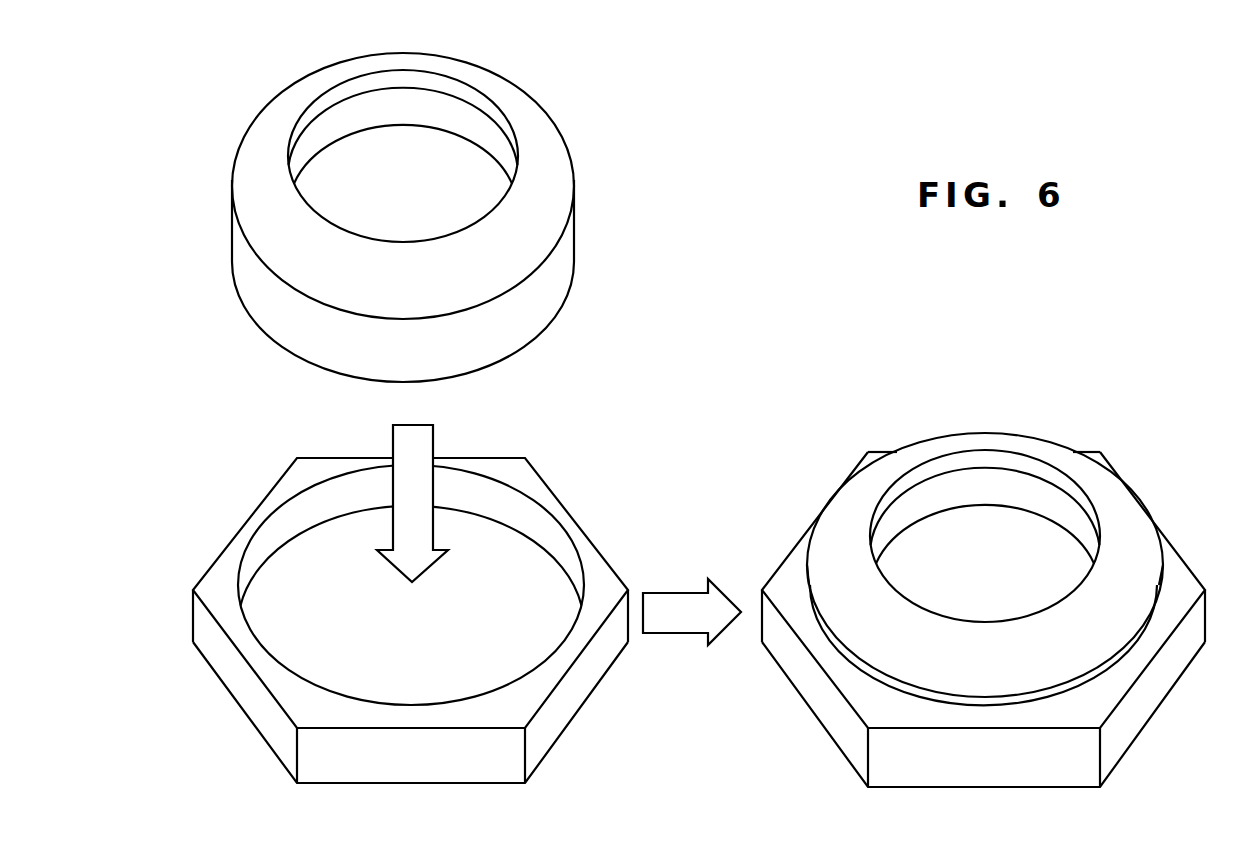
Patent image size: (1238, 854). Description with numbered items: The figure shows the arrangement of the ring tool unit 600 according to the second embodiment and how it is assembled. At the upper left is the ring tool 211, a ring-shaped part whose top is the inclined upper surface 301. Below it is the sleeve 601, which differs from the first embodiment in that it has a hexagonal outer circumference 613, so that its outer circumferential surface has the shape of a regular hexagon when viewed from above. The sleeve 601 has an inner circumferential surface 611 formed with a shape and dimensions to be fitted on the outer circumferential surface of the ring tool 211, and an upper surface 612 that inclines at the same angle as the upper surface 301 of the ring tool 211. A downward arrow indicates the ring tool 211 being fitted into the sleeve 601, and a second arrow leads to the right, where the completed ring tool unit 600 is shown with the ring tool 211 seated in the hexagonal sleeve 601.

The ring tool 211 is at (393, 217).
The upper surface of ring tool 301 is at (552, 177).
The ring tool unit 600 is at (797, 495).
The sleeve 601 is at (401, 593).
The inner circumferential surface 611 is at (550, 523).
The upper surface of sleeve 612 is at (595, 582).
The hexagonal outer circumference 613 is at (553, 485).